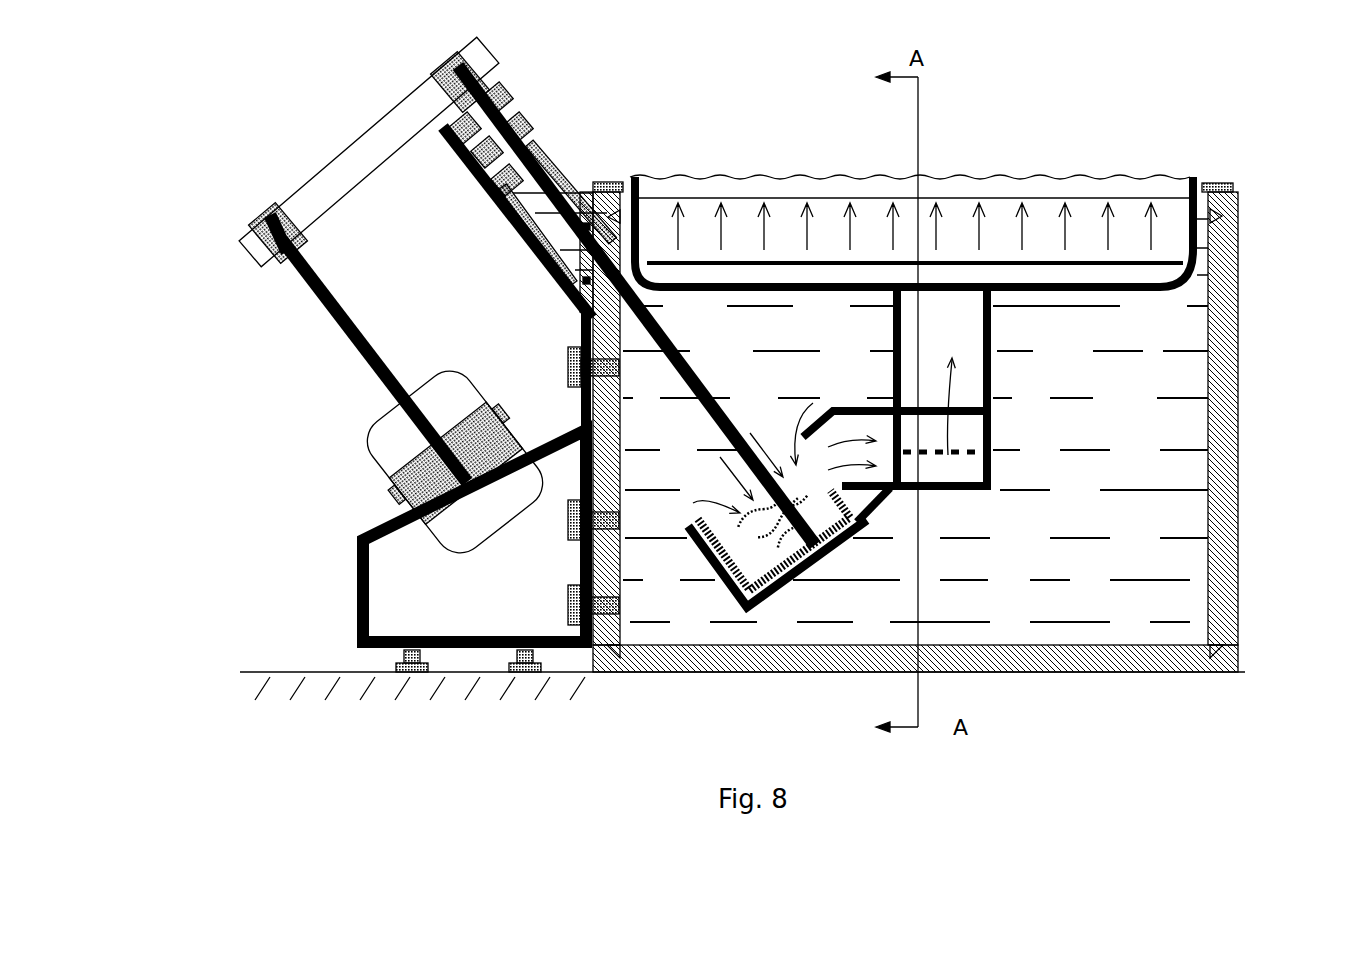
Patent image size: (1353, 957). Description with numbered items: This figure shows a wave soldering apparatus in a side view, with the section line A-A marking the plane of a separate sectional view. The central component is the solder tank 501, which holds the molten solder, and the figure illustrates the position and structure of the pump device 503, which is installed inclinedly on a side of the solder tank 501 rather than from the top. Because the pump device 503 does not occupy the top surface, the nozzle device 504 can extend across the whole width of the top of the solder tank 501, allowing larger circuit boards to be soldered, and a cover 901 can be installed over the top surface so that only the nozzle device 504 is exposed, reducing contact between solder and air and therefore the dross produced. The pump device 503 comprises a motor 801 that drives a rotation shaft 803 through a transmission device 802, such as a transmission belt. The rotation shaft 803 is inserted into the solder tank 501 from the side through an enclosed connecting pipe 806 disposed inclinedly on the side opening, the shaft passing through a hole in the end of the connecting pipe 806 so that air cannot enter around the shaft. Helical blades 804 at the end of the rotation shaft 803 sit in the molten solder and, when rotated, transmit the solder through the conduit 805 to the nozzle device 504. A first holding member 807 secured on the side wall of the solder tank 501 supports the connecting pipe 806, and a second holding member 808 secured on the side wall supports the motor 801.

The pump device 503 is at (193, 152).
The transmission device 802 is at (345, 177).
The rotation shaft 803 is at (547, 147).
The connecting pipe 806 is at (582, 193).
The nozzle device 504 is at (990, 212).
The cover 901 is at (1215, 185).
The first holding member 807 is at (535, 255).
The motor 801 is at (372, 440).
The solder tank 501 is at (1238, 428).
The second holding member 808 is at (352, 565).
The conduit 805 is at (992, 400).
The helical blades 804 is at (755, 555).